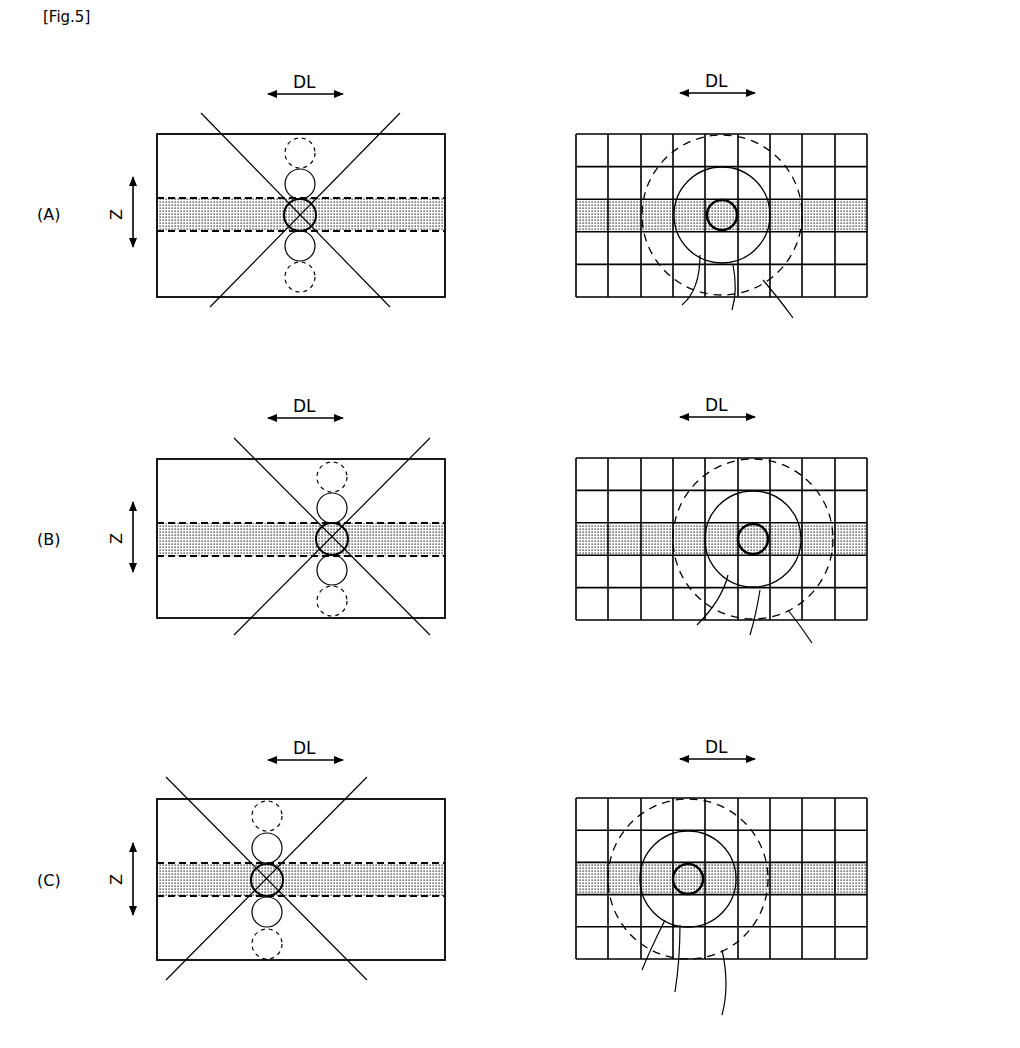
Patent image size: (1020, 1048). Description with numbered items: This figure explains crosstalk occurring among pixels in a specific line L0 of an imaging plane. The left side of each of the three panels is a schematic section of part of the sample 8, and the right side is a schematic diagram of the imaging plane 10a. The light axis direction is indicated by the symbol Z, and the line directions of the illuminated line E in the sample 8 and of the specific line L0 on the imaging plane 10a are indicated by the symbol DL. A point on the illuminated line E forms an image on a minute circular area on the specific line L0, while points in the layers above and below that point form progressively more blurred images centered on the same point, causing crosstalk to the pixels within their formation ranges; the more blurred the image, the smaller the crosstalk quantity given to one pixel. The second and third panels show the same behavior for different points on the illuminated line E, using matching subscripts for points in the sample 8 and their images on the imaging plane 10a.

The sample 8 is at (416, 114).
The imaging plane 10a is at (832, 113).
The illuminated line E is at (310, 547).
The specific line L0 is at (734, 547).